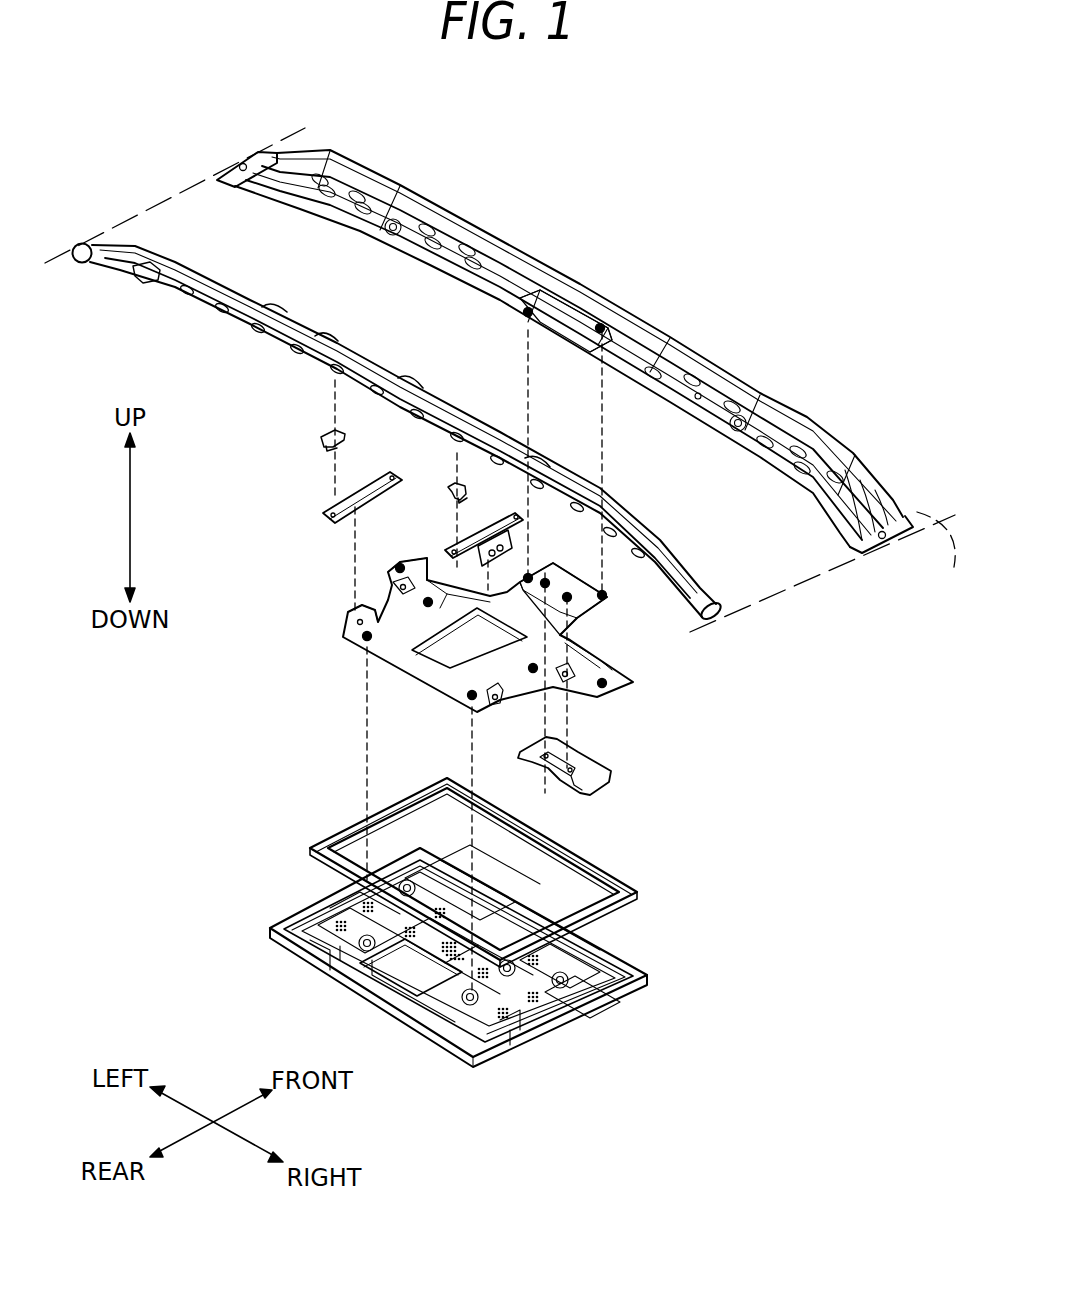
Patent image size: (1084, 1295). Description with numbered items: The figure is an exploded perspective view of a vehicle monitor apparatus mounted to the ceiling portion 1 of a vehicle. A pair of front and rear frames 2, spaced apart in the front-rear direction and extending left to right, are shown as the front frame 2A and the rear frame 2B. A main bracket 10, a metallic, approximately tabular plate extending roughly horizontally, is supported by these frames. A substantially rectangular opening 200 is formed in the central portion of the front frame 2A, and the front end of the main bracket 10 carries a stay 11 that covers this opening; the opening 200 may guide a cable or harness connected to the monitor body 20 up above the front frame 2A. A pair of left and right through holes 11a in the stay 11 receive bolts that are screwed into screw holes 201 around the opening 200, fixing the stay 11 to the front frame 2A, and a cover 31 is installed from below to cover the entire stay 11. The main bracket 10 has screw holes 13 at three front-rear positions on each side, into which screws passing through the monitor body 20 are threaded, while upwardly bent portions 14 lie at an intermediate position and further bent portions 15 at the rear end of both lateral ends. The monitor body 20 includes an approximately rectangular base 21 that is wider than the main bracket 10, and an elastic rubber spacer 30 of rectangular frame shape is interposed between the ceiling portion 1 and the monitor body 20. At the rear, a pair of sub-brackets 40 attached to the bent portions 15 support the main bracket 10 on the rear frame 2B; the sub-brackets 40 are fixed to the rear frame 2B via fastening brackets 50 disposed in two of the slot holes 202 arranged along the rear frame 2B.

The ceiling portion 1 is at (504, 380).
The frames 2 is at (493, 386).
The front frame 2A is at (808, 418).
The rear frame 2B is at (640, 524).
The main bracket 10 is at (400, 666).
The stay 11 is at (598, 608).
The through holes 11a is at (600, 592).
The screw holes 13 is at (428, 598).
The bent portions 14 is at (398, 584).
The bent portions 15 is at (357, 618).
The monitor body 20 is at (536, 922).
The base 21 is at (469, 956).
The spacer 30 is at (585, 852).
The cover 31 is at (594, 772).
The sub-brackets 40 is at (345, 495).
The fastening brackets 50 is at (325, 436).
The opening 200 is at (545, 326).
The screw holes 201 is at (530, 308).
The slot holes 202 is at (340, 369).